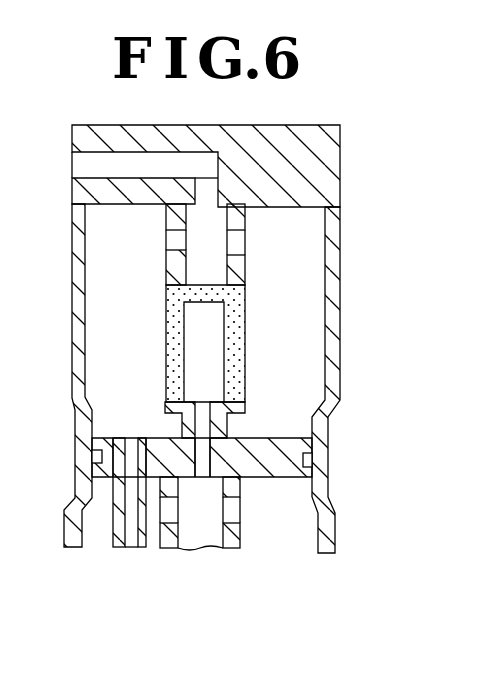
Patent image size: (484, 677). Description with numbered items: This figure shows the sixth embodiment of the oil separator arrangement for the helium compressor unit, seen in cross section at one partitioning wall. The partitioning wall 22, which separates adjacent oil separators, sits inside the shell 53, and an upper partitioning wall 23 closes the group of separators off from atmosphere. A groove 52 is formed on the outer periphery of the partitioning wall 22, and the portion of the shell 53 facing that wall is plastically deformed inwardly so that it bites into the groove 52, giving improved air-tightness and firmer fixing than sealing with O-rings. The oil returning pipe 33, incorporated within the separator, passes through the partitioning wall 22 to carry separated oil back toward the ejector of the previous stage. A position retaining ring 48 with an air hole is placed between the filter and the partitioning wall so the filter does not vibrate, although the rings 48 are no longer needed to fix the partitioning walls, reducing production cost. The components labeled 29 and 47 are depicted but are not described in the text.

The partitioning wall 22 is at (288, 483).
The partitioning wall 23 is at (298, 163).
The insulating member 29 is at (176, 336).
The oil returning pipe 33 is at (112, 524).
The contact member 47 is at (168, 242).
The position retaining ring 48 is at (247, 266).
The groove 52 is at (92, 455).
The shell 53 is at (338, 226).